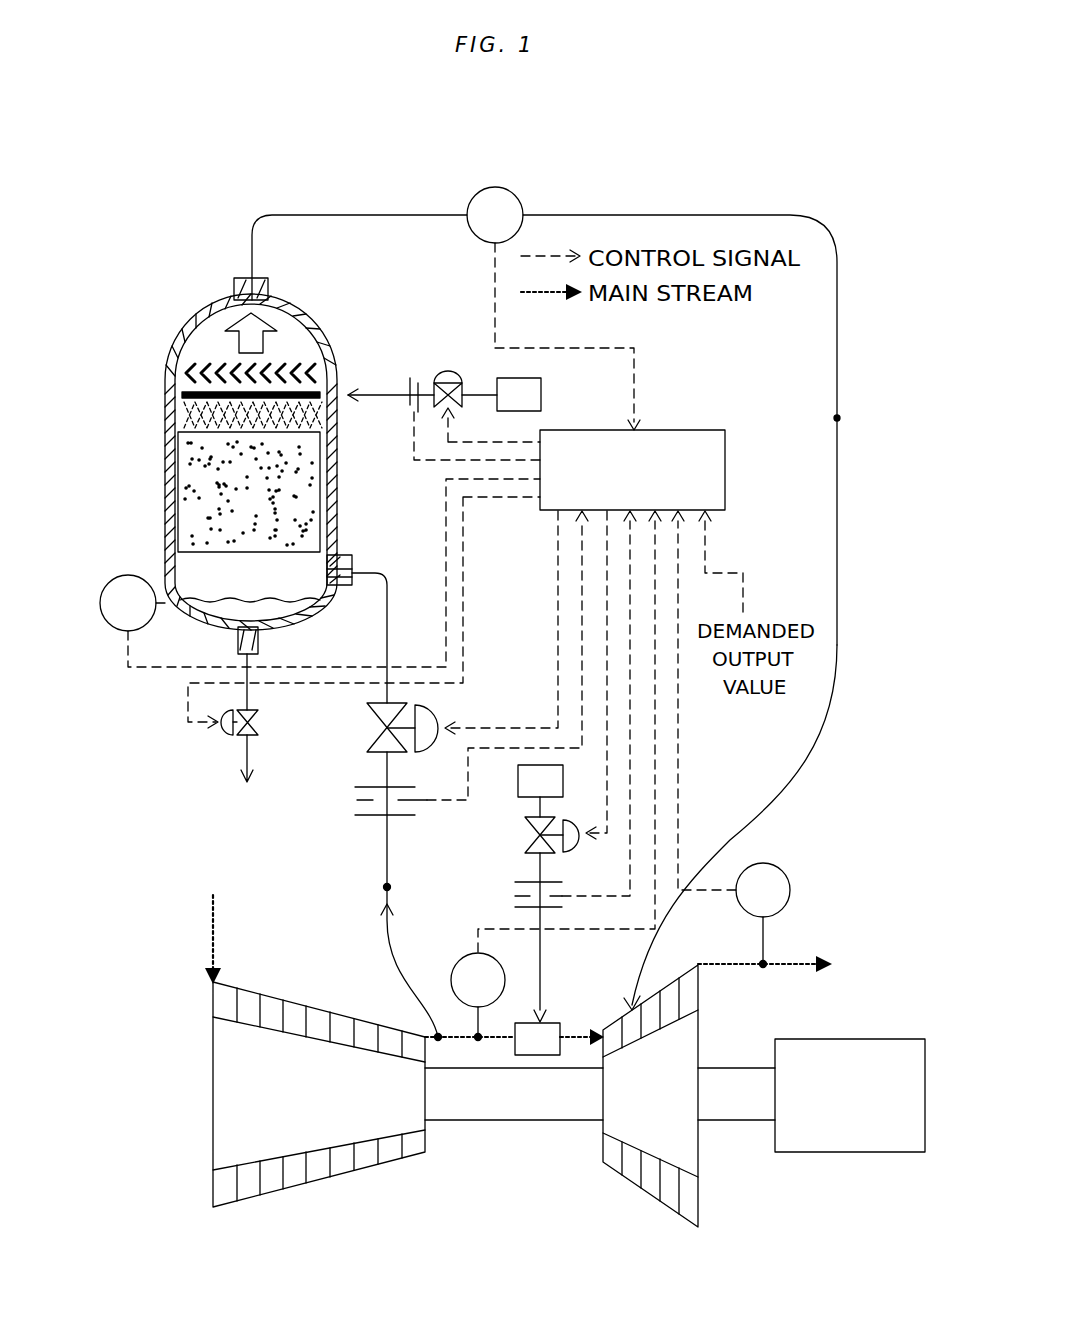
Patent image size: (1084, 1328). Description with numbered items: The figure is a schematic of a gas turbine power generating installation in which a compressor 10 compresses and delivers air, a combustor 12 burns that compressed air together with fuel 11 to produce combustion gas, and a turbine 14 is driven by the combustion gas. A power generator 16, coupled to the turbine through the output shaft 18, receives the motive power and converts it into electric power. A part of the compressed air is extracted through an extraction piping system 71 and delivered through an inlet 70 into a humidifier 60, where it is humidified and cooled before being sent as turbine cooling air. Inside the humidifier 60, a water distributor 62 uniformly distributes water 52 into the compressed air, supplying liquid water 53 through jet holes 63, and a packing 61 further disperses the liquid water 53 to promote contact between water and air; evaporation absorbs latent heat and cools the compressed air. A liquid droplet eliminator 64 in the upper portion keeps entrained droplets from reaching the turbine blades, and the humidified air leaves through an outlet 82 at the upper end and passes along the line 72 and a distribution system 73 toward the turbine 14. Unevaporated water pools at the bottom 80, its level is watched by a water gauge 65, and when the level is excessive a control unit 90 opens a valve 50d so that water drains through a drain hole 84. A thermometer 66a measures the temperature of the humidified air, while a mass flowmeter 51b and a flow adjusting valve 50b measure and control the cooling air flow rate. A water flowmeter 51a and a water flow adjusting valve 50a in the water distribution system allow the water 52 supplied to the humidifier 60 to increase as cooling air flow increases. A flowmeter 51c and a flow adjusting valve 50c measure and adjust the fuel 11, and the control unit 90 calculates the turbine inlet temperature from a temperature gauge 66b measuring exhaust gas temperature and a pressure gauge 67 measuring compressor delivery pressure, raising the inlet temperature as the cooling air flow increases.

The compressor 10 is at (280, 982).
The fuel 11 is at (518, 778).
The combustor 12 is at (555, 1022).
The turbine 14 is at (698, 1170).
The power generator 16 is at (838, 1158).
The shaft 18 is at (508, 1125).
The water flow adjusting valve 50a is at (450, 378).
The flow adjusting valve 50b is at (372, 720).
The flow adjusting valve 50c is at (528, 852).
The valve 50d is at (228, 736).
The water flowmeter 51a is at (405, 372).
The mass flowmeter 51b is at (358, 802).
The flowmeter 51c is at (512, 896).
The water 52 is at (541, 395).
The liquid water 53 is at (340, 412).
The humidifier 60 is at (335, 267).
The packing 61 is at (337, 464).
The water distributor 62 is at (182, 395).
The jet holes 63 is at (186, 418).
The liquid droplet eliminator 64 is at (188, 368).
The water gauge 65 is at (128, 575).
The thermometer 66a is at (494, 187).
The temperature gauge 66b is at (790, 890).
The pressure gauge 67 is at (456, 958).
The inlet 70 is at (340, 588).
The extraction piping system 71 is at (390, 956).
The humidified air outlet pipe 72 is at (837, 333).
The distribution system 73 is at (837, 472).
The bottom 80 is at (272, 628).
The outlet 82 is at (240, 280).
The drain hole 84 is at (238, 644).
The control unit 90 is at (696, 430).